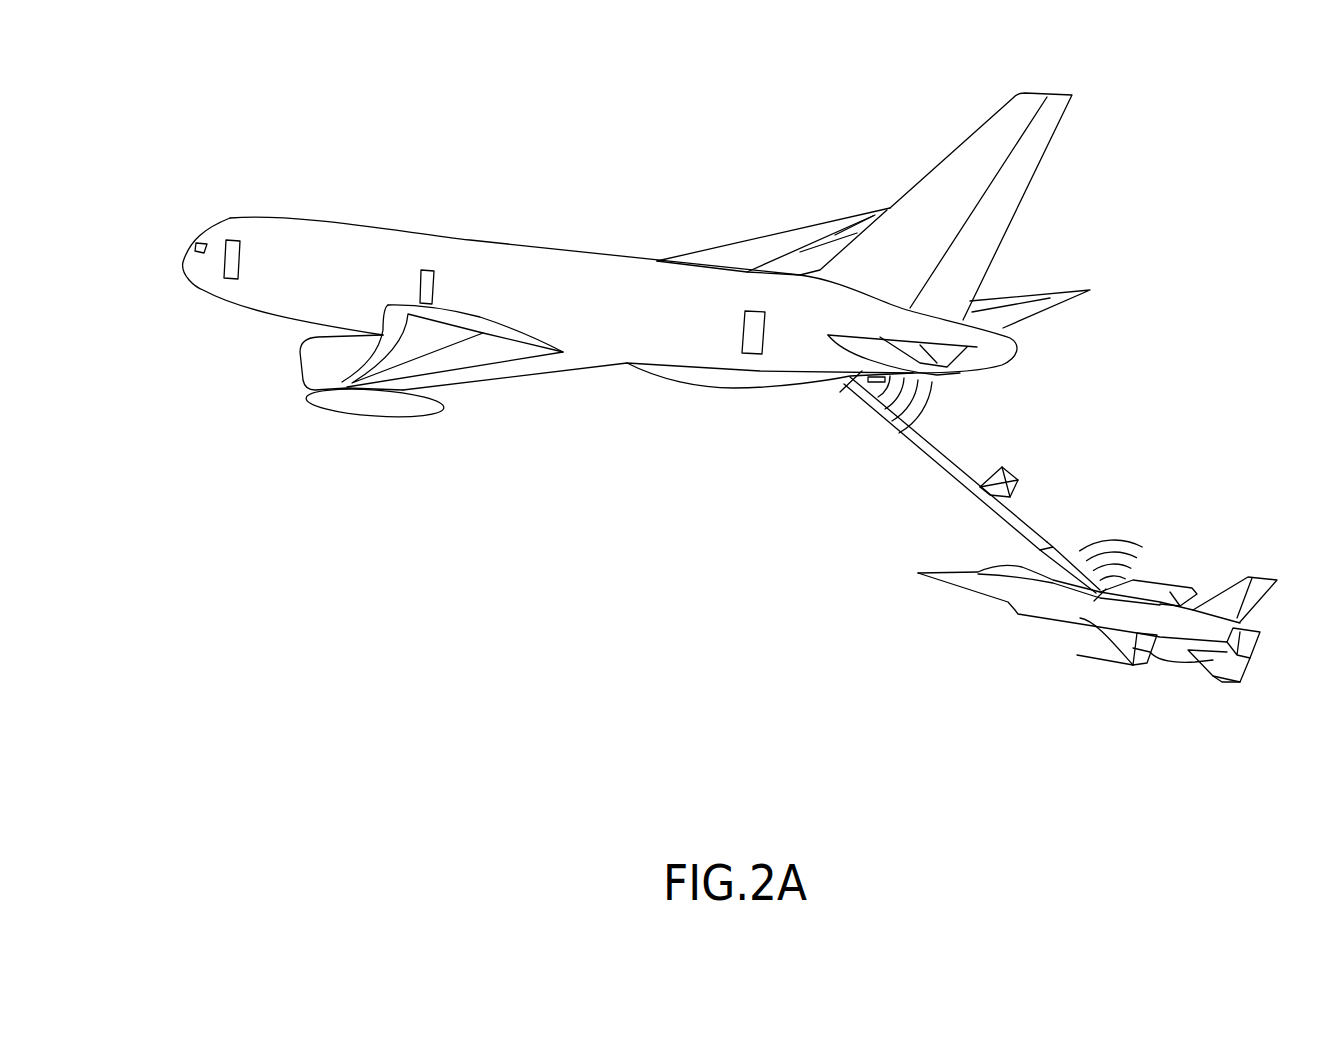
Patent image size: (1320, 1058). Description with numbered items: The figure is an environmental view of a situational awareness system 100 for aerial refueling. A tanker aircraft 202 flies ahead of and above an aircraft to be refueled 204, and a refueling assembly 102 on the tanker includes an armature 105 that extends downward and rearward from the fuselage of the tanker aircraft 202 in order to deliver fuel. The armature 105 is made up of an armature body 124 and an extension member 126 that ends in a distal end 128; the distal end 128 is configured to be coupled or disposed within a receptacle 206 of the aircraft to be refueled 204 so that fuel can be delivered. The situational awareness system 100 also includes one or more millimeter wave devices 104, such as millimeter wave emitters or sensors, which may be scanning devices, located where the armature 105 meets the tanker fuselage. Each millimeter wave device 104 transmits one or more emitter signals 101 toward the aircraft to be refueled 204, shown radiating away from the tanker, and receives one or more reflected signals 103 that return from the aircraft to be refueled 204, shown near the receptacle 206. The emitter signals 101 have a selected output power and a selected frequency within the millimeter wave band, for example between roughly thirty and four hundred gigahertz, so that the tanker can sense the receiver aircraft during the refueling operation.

The situational awareness system 100 is at (226, 94).
The emitter signal 101 is at (936, 416).
The refueling assembly 102 is at (869, 550).
The reflected signal 103 is at (1145, 528).
The millimeter wave device 104 is at (871, 387).
The armature 105 is at (918, 471).
The armature body 124 is at (1007, 517).
The extension member 126 is at (1053, 543).
The distal end 128 is at (1125, 580).
The tanker aircraft 202 is at (262, 193).
The aircraft to be refueled 204 is at (1166, 686).
The receptacle 206 is at (1072, 624).